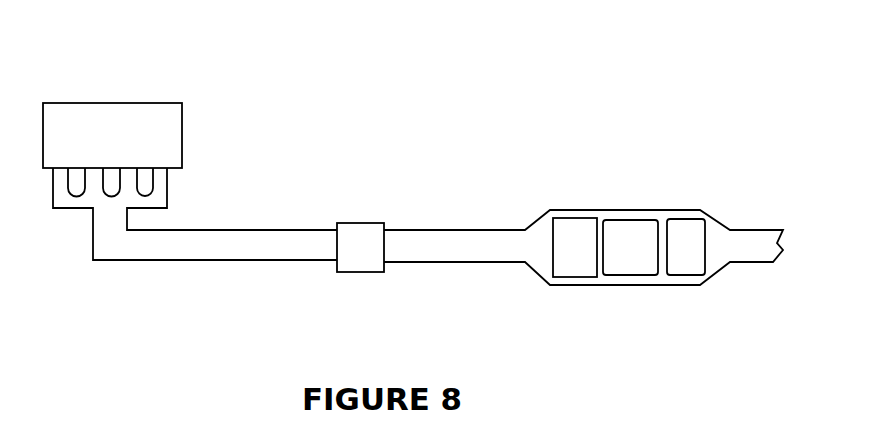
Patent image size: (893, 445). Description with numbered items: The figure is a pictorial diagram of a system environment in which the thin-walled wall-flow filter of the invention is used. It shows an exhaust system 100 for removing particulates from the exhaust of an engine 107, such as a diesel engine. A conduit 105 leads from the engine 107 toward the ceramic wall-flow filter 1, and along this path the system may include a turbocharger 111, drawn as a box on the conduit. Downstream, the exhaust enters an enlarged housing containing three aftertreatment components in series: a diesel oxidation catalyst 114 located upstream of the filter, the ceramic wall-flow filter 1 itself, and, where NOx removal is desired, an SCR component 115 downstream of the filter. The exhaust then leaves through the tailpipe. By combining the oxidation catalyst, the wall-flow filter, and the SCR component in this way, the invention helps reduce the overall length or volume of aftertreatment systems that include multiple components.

The engine 107 is at (182, 117).
The conduit 105 is at (120, 252).
The turbocharger 111 is at (345, 222).
The exhaust system 100 is at (430, 226).
The diesel oxidation catalyst 114 is at (585, 218).
The ceramic wall-flow filter 1 is at (627, 220).
The SCR component 115 is at (687, 220).